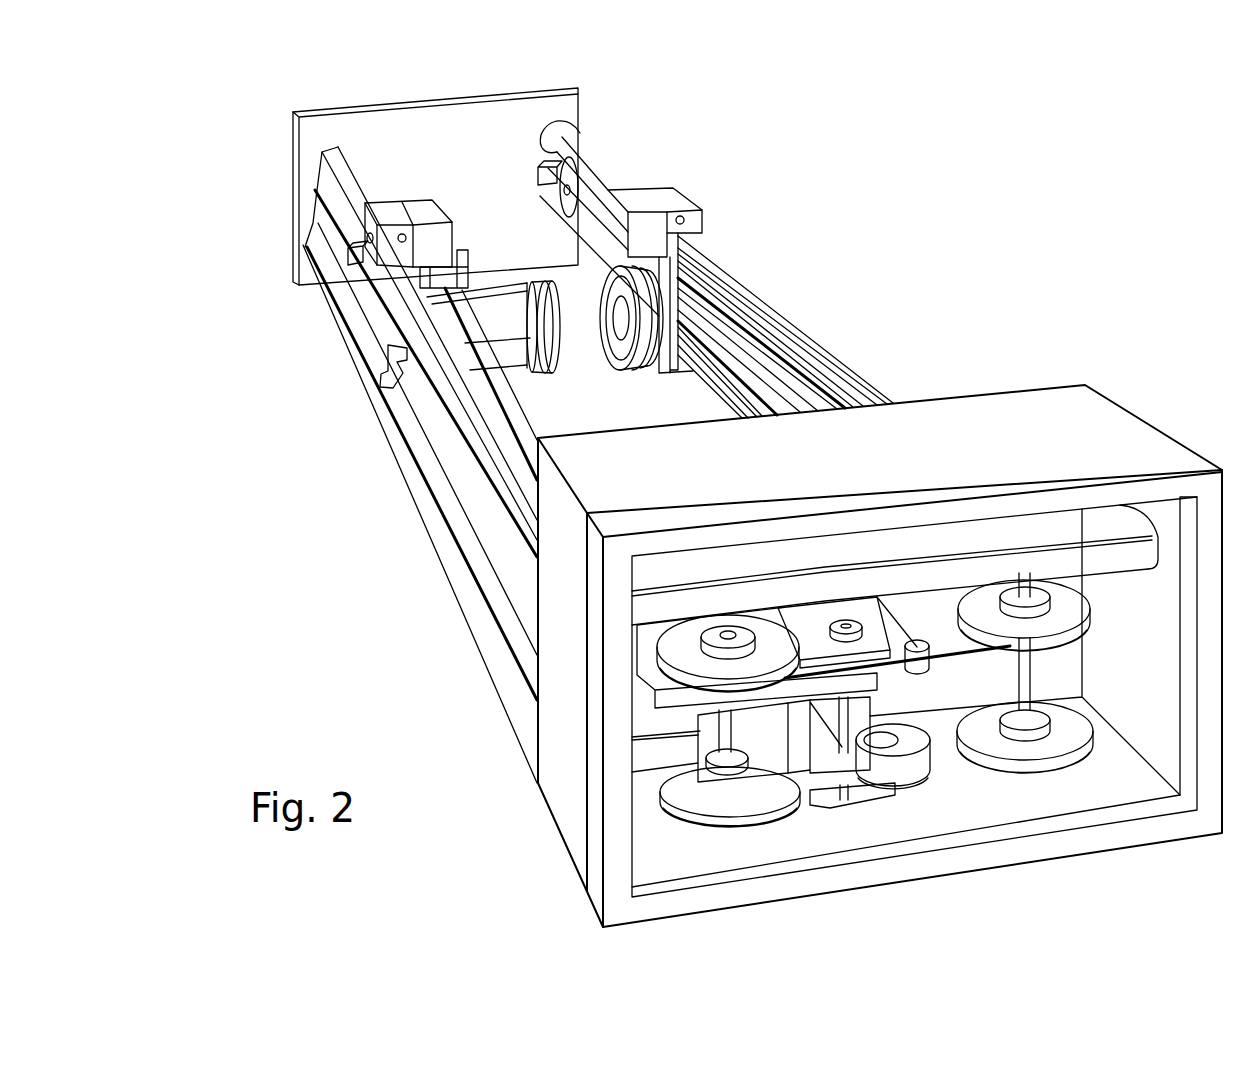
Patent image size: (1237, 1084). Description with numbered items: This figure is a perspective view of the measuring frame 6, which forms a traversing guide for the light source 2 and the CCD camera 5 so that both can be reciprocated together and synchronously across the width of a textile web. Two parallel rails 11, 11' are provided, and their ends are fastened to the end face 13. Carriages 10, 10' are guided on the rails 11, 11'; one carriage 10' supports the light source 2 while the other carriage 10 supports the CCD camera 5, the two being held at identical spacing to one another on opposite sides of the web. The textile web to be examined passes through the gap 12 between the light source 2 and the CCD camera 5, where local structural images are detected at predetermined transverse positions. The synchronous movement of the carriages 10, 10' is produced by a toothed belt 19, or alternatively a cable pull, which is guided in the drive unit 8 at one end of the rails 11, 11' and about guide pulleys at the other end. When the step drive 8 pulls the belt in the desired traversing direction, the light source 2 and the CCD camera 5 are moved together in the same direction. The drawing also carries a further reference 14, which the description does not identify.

The light source 2 is at (686, 289).
The CCD camera 5 is at (512, 372).
The measuring frame 6 is at (910, 291).
The drive unit 8 is at (920, 806).
The carriage 10 is at (416, 210).
The carriage 10' is at (627, 196).
The rail 11 is at (420, 465).
The rail 11' is at (733, 277).
The gap 12 is at (581, 328).
The end face 13 is at (365, 125).
The recess 14 is at (590, 125).
The toothed belt 19 is at (752, 388).